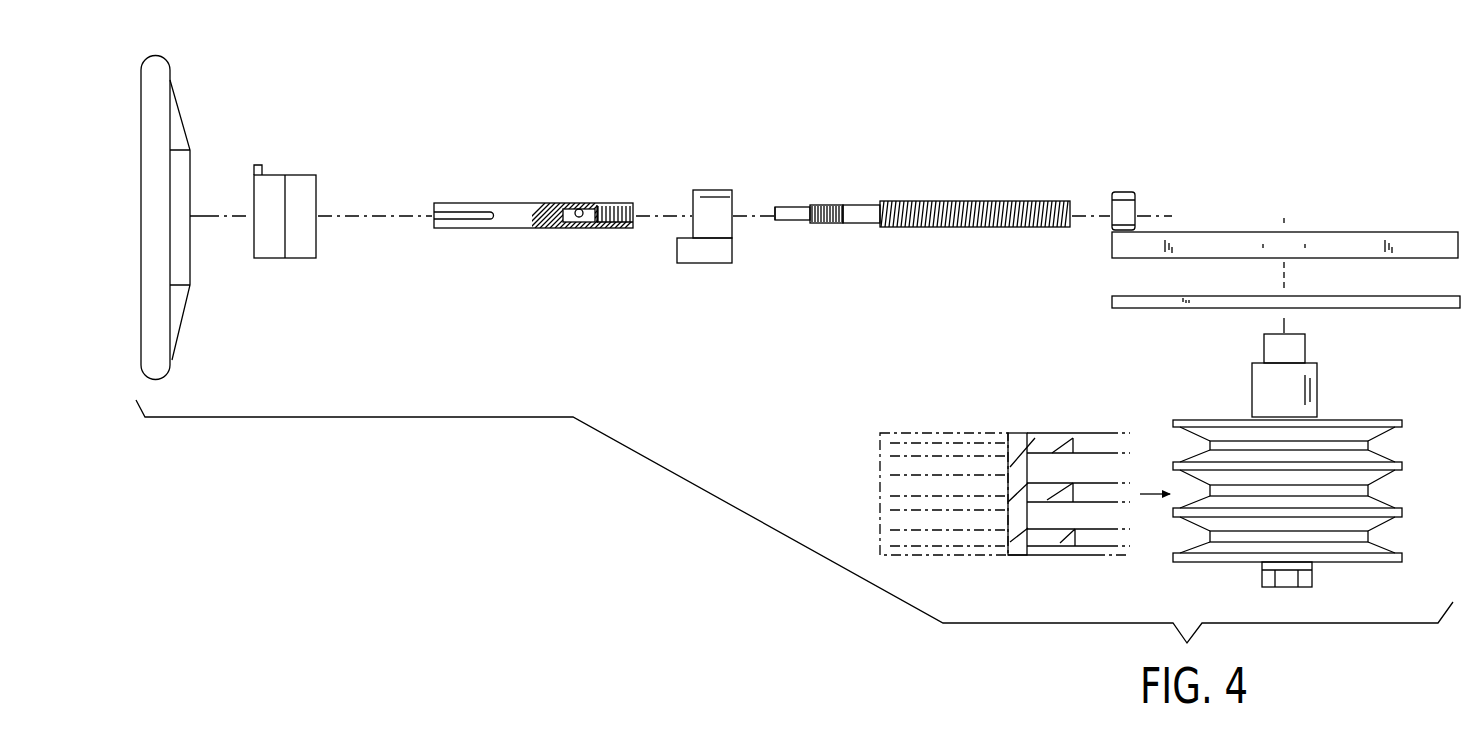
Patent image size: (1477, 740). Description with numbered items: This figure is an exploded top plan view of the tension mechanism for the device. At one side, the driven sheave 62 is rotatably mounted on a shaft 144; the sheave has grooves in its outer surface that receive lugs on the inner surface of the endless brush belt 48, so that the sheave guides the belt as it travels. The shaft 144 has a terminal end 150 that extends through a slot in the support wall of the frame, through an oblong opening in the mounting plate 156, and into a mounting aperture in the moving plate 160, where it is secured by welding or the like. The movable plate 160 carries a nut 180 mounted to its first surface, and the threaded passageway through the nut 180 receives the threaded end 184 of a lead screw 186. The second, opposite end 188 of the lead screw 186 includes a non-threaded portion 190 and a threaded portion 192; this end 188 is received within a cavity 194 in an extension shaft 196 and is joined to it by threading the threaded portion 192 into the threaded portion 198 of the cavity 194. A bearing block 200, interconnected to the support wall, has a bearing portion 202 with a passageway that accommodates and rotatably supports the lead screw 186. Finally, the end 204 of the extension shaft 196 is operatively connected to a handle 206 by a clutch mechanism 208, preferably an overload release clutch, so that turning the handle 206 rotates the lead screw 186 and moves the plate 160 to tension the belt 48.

The handle 206 is at (176, 57).
The clutch mechanism 208 is at (301, 264).
The end of extension shaft 204 is at (435, 204).
The extension shaft 196 is at (511, 207).
The cavity 194 is at (584, 208).
The threaded portion of cavity 198 is at (599, 229).
The bearing block 200 is at (688, 190).
The bearing portion 202 is at (712, 207).
The second end of lead screw 188 is at (785, 204).
The non-threaded portion 190 is at (792, 217).
The threaded portion 192 is at (823, 228).
The lead screw 186 is at (866, 219).
The threaded end of lead screw 184 is at (1065, 199).
The nut 180 is at (1120, 191).
The moving plate 160 is at (1430, 229).
The mounting plate 156 is at (1430, 310).
The terminal end 150 is at (1309, 350).
The shaft 144 is at (1312, 395).
The driven sheave 62 is at (1362, 565).
The brush belt 48 is at (1020, 440).